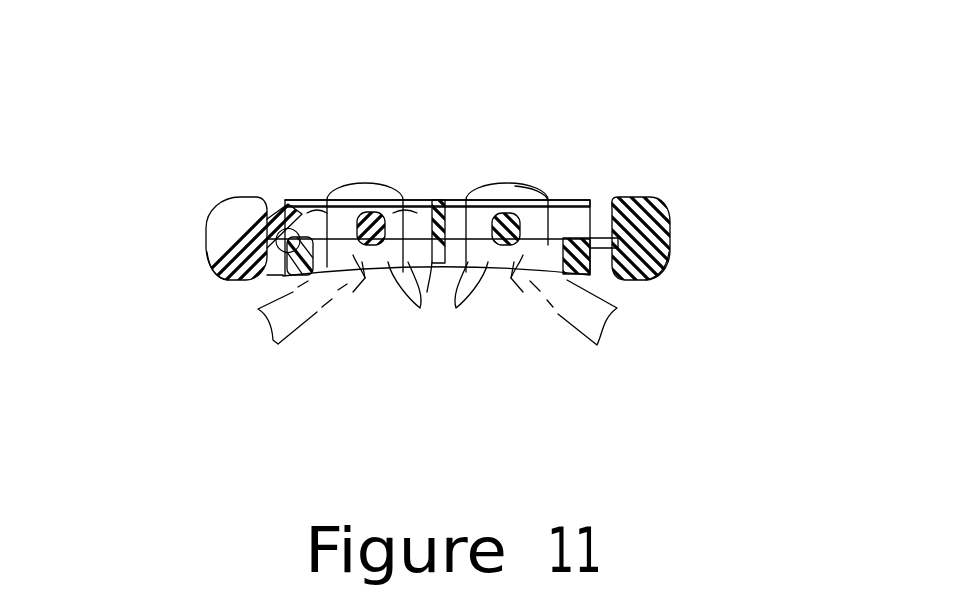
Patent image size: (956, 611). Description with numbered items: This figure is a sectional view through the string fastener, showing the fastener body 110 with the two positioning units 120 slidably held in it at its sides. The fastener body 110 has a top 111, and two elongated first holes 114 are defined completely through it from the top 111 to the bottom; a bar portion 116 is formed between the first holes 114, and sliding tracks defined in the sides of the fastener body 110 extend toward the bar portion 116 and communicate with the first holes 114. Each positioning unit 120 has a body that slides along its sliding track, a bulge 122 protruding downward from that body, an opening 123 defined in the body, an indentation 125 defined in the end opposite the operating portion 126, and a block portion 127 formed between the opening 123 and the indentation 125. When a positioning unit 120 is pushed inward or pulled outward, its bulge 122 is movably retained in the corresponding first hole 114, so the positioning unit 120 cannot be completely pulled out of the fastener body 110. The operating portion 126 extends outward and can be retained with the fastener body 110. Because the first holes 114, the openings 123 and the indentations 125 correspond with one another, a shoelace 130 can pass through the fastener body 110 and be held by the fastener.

The fastener body 110 is at (453, 199).
The top 111 is at (331, 207).
The first holes 114 is at (377, 262).
The bar portion 116 is at (438, 200).
The positioning units 120 is at (206, 233).
The bulge 122 is at (350, 270).
The opening 123 is at (283, 276).
The indentation 125 is at (430, 262).
The operating portion 126 is at (207, 262).
The block portion 127 is at (367, 207).
The shoelace 130 is at (534, 183).